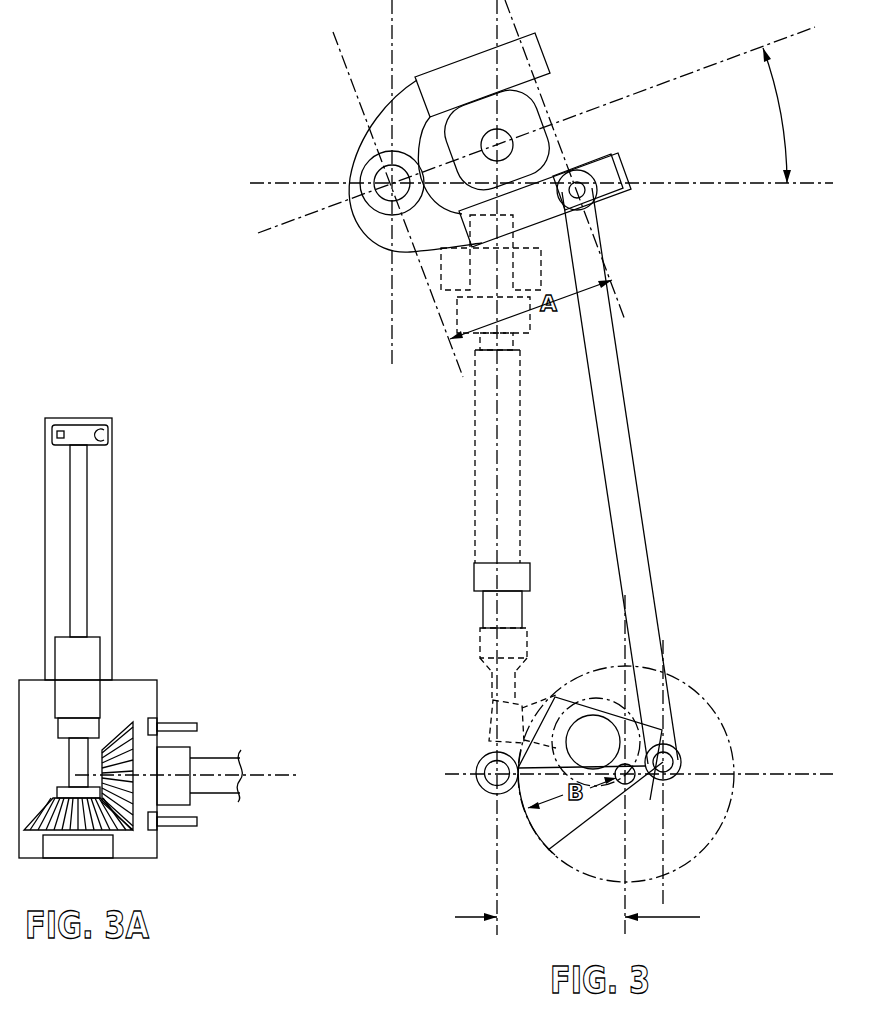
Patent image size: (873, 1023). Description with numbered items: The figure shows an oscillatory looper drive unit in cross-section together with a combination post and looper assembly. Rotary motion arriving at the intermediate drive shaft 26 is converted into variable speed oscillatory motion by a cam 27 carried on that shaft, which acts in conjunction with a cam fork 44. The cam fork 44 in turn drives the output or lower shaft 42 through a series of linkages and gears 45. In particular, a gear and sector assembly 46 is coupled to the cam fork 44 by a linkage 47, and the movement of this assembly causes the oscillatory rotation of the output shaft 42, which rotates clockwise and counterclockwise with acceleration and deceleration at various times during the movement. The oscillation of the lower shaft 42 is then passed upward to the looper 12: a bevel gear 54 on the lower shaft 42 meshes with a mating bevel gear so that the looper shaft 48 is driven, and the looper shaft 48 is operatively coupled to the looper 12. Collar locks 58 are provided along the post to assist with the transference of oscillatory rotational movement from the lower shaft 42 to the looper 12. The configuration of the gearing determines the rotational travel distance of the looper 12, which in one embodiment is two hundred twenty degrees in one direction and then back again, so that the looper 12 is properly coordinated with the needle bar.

In FIG. 3A, the looper 12 is at (108, 427).
In FIG. 3, the intermediate drive shaft 26 is at (518, 130).
In FIG. 3, the cam 27 is at (468, 116).
In FIG. 3, the lower shaft 42 is at (482, 790).
In FIG. 3A, the lower shaft 42 is at (215, 770).
In FIG. 3, the cam fork 44 is at (392, 127).
In FIG. 3, the linkages and gears 45 is at (642, 352).
In FIG. 3, the gear and sector assembly 46 is at (728, 713).
In FIG. 3, the linkage 47 is at (617, 412).
In FIG. 3A, the looper shaft 48 is at (87, 537).
In FIG. 3A, the bevel gear 54 is at (118, 795).
In FIG. 3A, the collar locks 58 is at (100, 733).